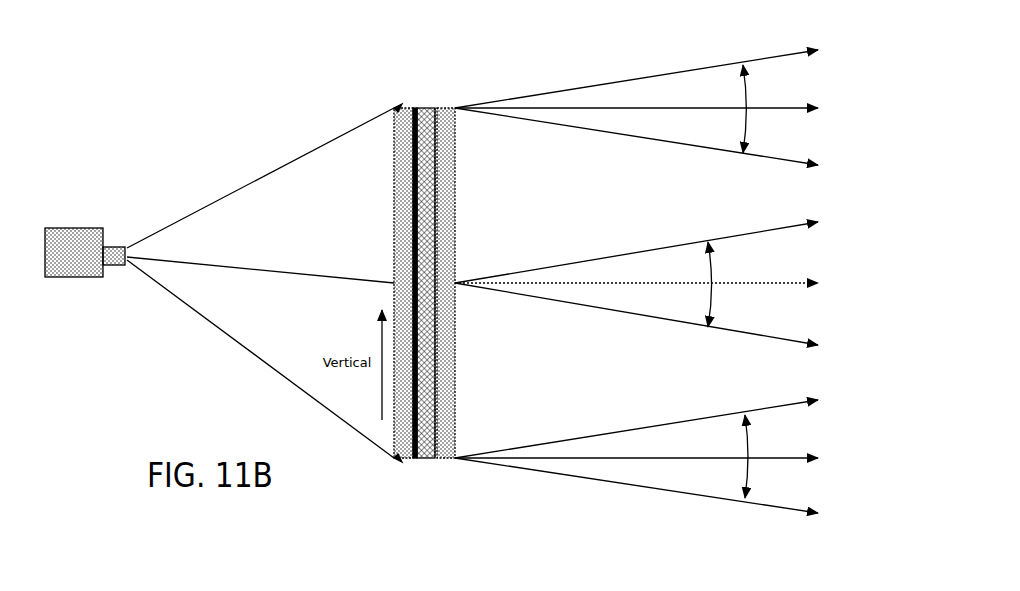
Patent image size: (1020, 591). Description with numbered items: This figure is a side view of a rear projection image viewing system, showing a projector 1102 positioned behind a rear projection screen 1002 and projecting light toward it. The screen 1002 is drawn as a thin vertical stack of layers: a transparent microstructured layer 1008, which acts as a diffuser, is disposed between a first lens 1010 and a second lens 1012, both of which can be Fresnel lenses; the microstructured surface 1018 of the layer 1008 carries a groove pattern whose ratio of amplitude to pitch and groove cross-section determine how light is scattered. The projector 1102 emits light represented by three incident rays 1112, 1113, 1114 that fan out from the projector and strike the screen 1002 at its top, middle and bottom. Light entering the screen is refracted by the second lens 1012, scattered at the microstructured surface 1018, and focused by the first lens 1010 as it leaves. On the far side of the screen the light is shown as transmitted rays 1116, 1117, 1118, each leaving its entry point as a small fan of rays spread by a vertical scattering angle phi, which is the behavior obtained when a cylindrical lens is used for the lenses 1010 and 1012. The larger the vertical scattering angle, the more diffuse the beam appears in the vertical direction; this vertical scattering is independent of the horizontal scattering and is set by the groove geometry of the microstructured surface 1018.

The projector 1102 is at (77, 226).
The rear projection screen 1002 is at (408, 258).
The incident ray 1112 is at (222, 196).
The incident ray 1113 is at (264, 272).
The incident ray 1114 is at (196, 318).
The second lens 1012 is at (394, 197).
The microstructured surface 1018 is at (415, 239).
The transparent microstructured layer 1008 is at (430, 153).
The first lens 1010 is at (445, 197).
The transmitted ray 1116 is at (612, 66).
The transmitted ray 1117 is at (598, 314).
The transmitted ray 1118 is at (612, 424).